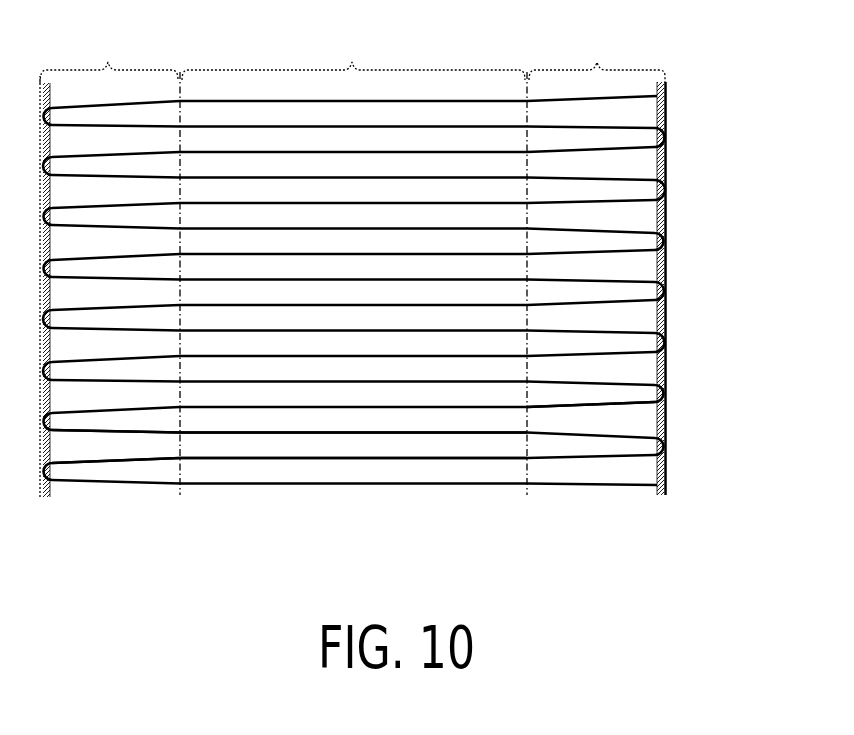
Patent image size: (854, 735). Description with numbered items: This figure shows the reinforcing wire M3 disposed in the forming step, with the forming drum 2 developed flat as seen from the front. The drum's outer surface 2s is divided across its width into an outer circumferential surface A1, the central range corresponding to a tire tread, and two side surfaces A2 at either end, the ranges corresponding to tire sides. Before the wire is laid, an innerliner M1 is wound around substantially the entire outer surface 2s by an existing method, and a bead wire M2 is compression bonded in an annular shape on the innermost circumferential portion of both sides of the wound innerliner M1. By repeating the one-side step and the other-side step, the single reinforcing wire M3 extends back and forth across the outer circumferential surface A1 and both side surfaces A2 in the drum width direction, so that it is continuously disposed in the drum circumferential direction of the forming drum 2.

The forming drum 2 is at (666, 371).
The outer surface 2s is at (453, 422).
The outer circumferential surface A1 is at (352, 62).
The side surfaces A2 is at (108, 62).
The innerliner M1 is at (372, 443).
The bead wire M2 is at (50, 445).
The reinforcing wire M3 is at (248, 462).